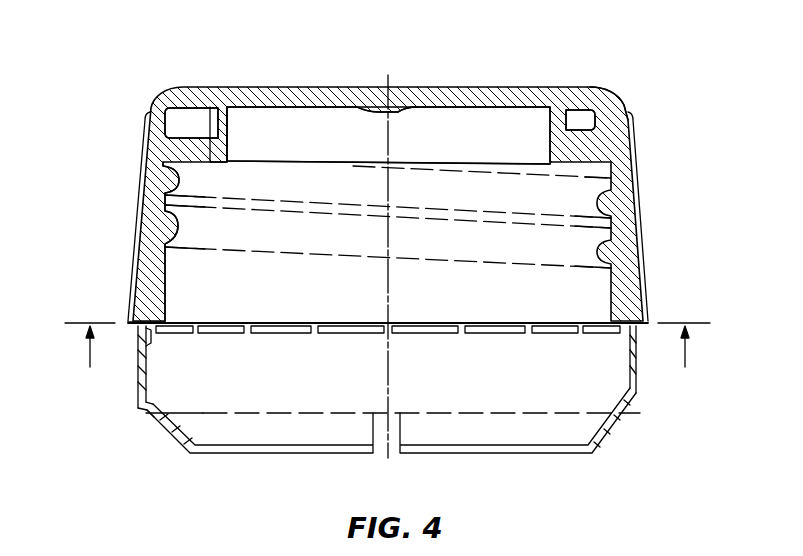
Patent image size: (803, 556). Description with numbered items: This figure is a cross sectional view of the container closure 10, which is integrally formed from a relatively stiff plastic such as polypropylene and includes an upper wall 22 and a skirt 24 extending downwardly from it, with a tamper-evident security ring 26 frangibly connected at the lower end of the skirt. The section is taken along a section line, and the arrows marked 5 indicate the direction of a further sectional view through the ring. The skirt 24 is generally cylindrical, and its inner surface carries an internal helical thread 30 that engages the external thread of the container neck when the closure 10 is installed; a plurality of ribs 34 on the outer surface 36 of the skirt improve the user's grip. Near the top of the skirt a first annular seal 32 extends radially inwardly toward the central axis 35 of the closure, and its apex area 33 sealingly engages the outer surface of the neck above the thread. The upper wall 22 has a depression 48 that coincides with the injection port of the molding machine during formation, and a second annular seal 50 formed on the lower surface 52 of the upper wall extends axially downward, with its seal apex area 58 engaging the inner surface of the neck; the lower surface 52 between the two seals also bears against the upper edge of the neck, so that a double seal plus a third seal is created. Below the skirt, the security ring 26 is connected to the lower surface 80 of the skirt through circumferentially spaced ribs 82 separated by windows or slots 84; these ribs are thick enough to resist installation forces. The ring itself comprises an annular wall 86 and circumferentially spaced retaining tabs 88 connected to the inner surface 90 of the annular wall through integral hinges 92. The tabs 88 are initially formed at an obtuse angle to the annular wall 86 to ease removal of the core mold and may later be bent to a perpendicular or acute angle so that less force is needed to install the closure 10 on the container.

The closure 10 is at (578, 58).
The upper wall 22 is at (473, 95).
The skirt 24 is at (152, 224).
The tamper-evident security ring 26 is at (140, 402).
The internal helical thread 30 is at (510, 204).
The first annular seal 32 is at (575, 116).
The apex area 33 is at (591, 125).
The ribs 34 is at (144, 172).
The central axis 35 is at (388, 140).
The outer surface 36 is at (136, 306).
The depression 48 is at (399, 90).
The second annular seal 50 is at (222, 137).
The lower surface 52 is at (448, 110).
The seal apex area 58 is at (212, 142).
The lower surface 80 is at (641, 325).
The ribs 82 is at (247, 334).
The windows or slots 84 is at (207, 296).
The annular wall 86 is at (146, 375).
The retaining tabs 88 is at (203, 433).
The inner surface 90 is at (329, 404).
The integral hinges 92 is at (150, 417).
The section line 5 is at (387, 362).